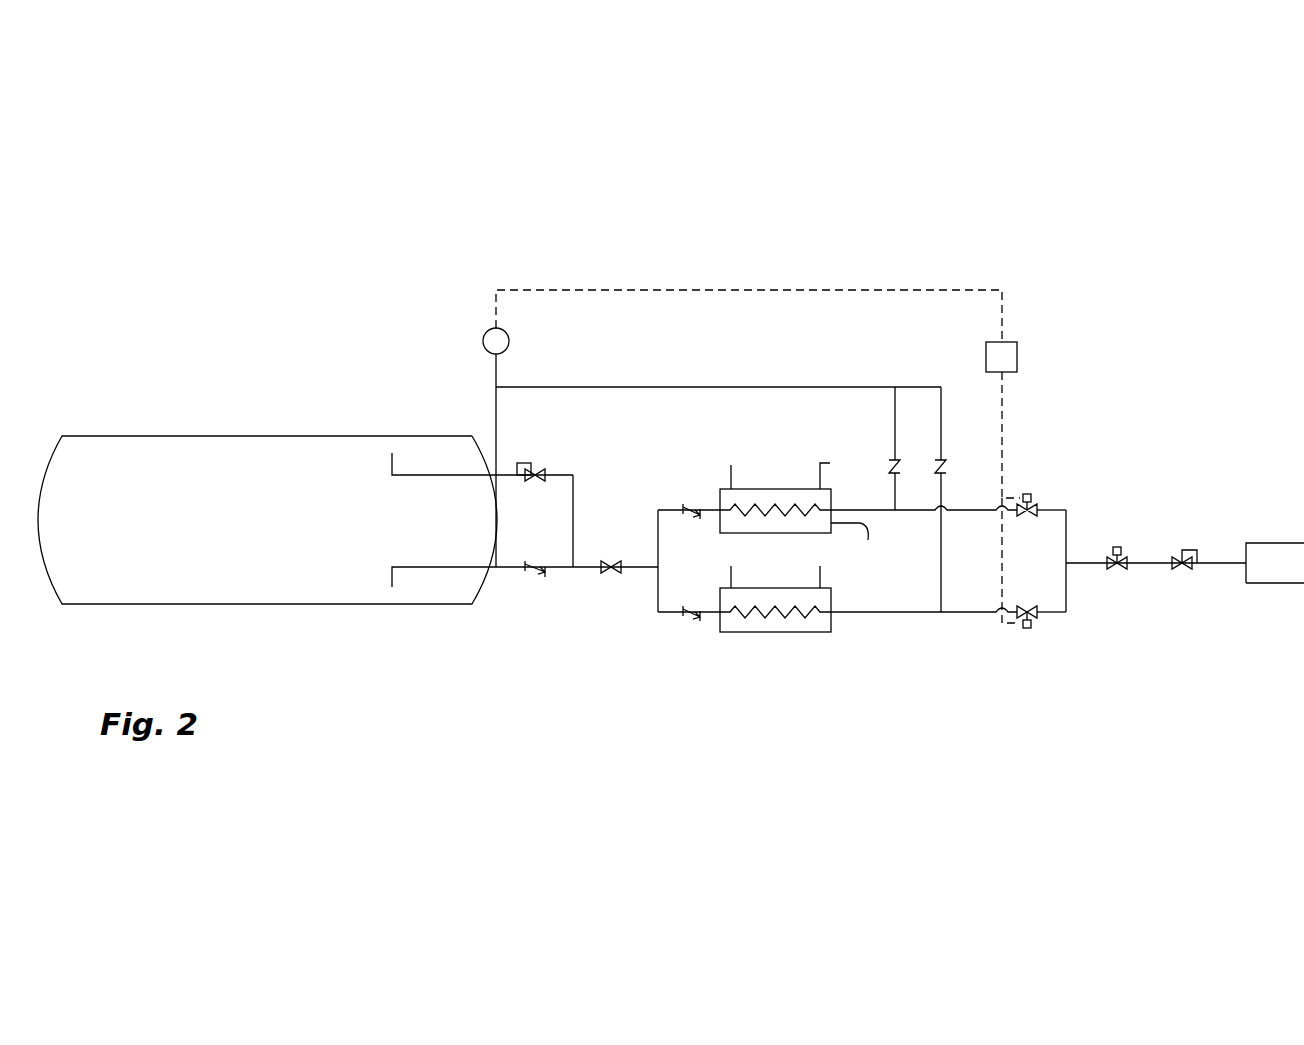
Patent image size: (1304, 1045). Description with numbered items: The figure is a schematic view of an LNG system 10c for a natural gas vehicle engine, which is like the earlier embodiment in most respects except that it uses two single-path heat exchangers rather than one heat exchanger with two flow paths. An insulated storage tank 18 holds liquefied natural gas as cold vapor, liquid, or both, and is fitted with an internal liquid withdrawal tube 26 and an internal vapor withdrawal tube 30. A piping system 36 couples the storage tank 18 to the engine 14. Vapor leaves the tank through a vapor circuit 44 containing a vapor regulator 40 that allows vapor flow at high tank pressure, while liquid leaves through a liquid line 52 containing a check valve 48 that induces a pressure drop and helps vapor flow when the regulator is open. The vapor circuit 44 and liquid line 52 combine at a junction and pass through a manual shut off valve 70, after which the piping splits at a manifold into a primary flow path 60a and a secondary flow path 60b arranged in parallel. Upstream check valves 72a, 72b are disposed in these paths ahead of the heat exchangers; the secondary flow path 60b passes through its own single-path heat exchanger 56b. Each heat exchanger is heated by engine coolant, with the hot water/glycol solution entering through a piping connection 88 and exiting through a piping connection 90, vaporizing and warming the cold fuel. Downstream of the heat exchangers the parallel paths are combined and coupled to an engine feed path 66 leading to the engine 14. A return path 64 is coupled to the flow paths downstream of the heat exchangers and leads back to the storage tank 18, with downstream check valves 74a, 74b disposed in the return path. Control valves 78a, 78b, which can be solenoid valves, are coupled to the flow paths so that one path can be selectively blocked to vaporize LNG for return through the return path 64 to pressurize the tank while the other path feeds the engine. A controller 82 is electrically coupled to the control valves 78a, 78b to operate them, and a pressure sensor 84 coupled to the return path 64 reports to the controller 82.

The system 10c is at (428, 628).
The engine 14 is at (1267, 543).
The insulated storage tank 18 is at (302, 436).
The internal liquid withdrawal tube 26 is at (387, 580).
The internal vapor withdrawal tube 30 is at (388, 460).
The piping system 36 is at (830, 372).
The vapor regulator 40 is at (536, 463).
The vapor circuit 44 is at (574, 497).
The check valve 48 is at (531, 575).
The liquid line 52 is at (496, 570).
The heat exchanger 56b is at (725, 678).
The primary flow path 60a is at (777, 507).
The secondary flow path 60b is at (790, 612).
The return path 64 is at (742, 387).
The engine feed path 66 is at (1078, 574).
The manual shut off valve 70 is at (608, 574).
The upstream check valve 72a is at (698, 500).
The upstream check valve 72b is at (692, 620).
The downstream check valve 74a is at (889, 463).
The downstream check valve 74b is at (946, 466).
The control valve 78a is at (1030, 494).
The control valve 78b is at (1032, 632).
The controller 82 is at (1017, 365).
The pressure sensor 84 is at (483, 342).
The piping connection 88 is at (731, 467).
The piping connection 90 is at (830, 463).